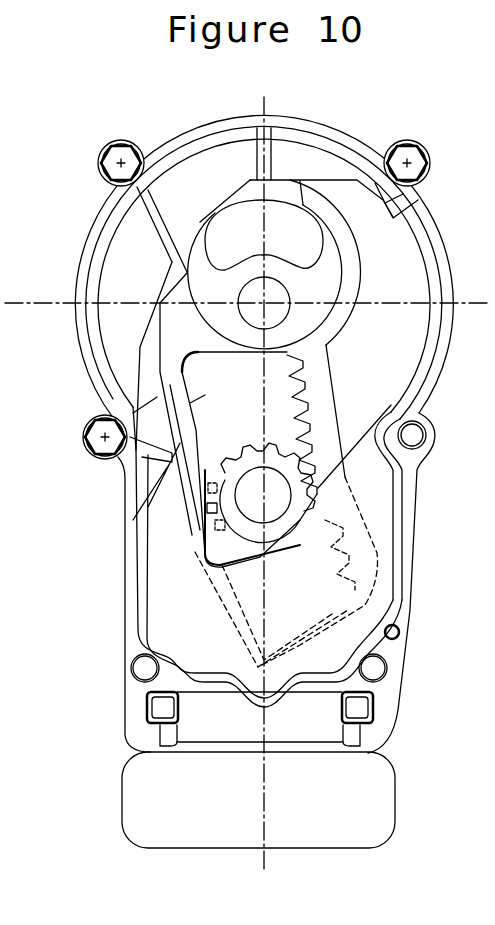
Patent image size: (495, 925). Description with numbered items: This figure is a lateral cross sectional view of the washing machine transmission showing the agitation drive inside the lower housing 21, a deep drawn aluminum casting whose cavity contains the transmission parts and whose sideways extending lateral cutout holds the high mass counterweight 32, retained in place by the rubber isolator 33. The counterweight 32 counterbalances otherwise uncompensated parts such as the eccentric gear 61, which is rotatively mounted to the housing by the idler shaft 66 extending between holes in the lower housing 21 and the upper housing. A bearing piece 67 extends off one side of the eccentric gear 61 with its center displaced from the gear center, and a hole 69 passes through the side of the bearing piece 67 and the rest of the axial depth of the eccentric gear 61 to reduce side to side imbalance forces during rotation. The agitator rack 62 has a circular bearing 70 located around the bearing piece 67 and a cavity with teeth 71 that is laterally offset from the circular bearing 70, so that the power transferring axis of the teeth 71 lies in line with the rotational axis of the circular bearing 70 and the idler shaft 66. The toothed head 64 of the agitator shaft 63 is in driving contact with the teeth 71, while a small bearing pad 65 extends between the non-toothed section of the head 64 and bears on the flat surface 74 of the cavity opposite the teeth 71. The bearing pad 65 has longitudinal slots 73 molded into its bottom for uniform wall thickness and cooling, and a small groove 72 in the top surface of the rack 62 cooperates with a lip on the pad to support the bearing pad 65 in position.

The lower housing 21 is at (408, 506).
The counterweight 32 is at (286, 804).
The rubber isolator 33 is at (375, 710).
The eccentric gear 61 is at (359, 356).
The agitator rack 62 is at (286, 354).
The agitator shaft 63 is at (252, 506).
The toothed head 64 is at (260, 440).
The bearing pad 65 is at (210, 533).
The idler shaft 66 is at (253, 315).
The bearing piece 67 is at (200, 295).
The hole 69 is at (225, 244).
The circular bearing 70 is at (357, 262).
The teeth 71 is at (292, 395).
The groove 72 is at (182, 368).
The longitudinal slots 73 is at (207, 505).
The flat surface 74 is at (190, 403).